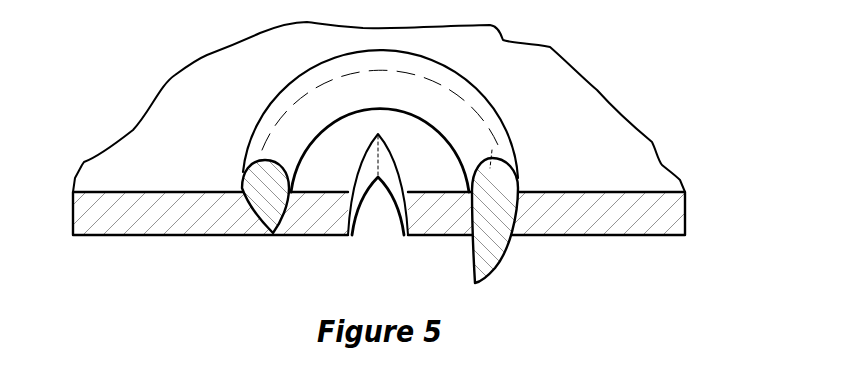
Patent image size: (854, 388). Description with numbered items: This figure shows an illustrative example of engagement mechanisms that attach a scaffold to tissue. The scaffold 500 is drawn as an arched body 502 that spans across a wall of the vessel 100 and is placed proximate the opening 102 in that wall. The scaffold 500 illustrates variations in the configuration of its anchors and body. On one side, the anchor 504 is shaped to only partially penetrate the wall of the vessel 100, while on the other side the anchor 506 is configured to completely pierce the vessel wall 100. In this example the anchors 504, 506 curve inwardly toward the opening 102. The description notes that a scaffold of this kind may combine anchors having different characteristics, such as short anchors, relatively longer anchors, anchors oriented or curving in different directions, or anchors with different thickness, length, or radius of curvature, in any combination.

The vessel 100 is at (623, 143).
The opening 102 is at (382, 236).
The scaffold 500 is at (423, 182).
The arch bridge 502 is at (479, 113).
The anchor 504 is at (254, 218).
The anchor 506 is at (498, 222).